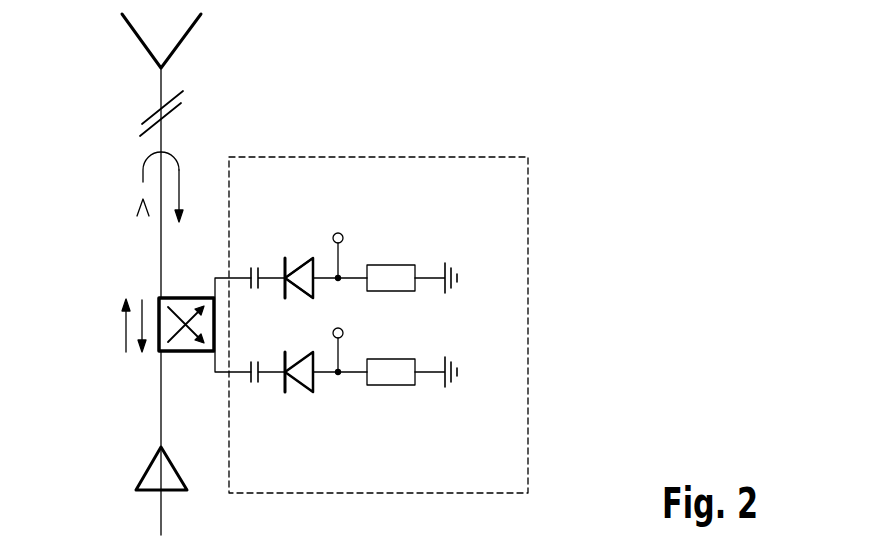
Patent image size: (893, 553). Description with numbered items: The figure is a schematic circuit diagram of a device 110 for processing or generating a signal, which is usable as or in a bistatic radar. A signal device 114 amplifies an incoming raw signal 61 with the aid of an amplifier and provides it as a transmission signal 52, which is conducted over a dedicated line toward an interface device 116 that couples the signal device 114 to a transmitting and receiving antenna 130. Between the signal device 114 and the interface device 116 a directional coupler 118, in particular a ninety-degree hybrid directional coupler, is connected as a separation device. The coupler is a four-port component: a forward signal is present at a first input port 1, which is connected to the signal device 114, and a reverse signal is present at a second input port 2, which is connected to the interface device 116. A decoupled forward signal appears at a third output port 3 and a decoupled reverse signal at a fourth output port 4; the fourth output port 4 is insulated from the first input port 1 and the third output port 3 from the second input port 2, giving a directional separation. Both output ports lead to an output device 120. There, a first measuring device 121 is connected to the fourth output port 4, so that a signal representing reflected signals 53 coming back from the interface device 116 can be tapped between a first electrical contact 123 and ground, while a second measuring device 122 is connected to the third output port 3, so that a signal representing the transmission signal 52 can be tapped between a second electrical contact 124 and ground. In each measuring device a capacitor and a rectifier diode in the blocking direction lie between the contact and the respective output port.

The first input port 1 is at (161, 365).
The second input port 2 is at (160, 244).
The third output port 3 is at (214, 278).
The fourth output port 4 is at (213, 374).
The transmission signal 52 is at (143, 178).
The reflected signals 53 is at (182, 165).
The raw signal 61 is at (161, 523).
The device 110 is at (328, 118).
The signal device 114 is at (140, 473).
The interface device 116 is at (158, 110).
The directional coupler 118 is at (152, 297).
The output device 120 is at (530, 286).
The first measuring device 121 is at (430, 374).
The second measuring device 122 is at (432, 276).
The first electrical contact 123 is at (353, 335).
The second electrical contact 124 is at (353, 238).
The transmitting and receiving antenna 130 is at (161, 82).